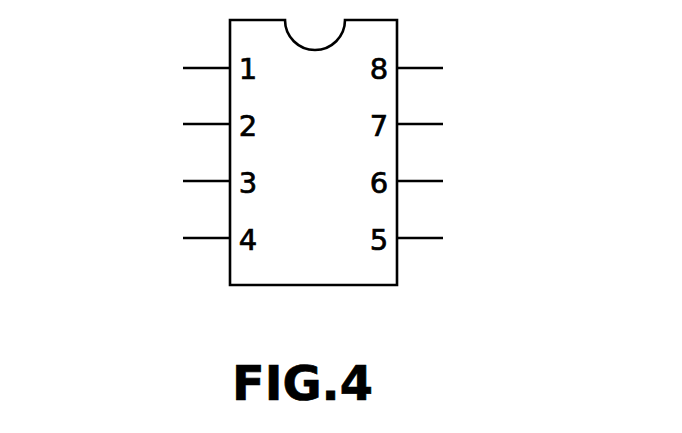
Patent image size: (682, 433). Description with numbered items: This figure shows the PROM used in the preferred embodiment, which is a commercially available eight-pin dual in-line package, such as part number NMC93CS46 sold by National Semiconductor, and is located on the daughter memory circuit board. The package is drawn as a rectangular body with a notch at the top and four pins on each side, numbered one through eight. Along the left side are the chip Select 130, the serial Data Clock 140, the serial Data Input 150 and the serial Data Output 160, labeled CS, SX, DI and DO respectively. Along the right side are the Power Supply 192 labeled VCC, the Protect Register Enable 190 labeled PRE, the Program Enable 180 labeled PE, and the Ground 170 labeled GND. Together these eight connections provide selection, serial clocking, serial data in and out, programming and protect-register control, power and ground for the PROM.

The chip Select 130 is at (133, 65).
The serial Data Clock 140 is at (133, 121).
The serial Data Input 150 is at (133, 178).
The serial Data Output 160 is at (133, 235).
The Ground 170 is at (510, 239).
The Program Enable 180 is at (500, 178).
The Protect Register Enable 190 is at (508, 125).
The Power Supply 192 is at (515, 73).